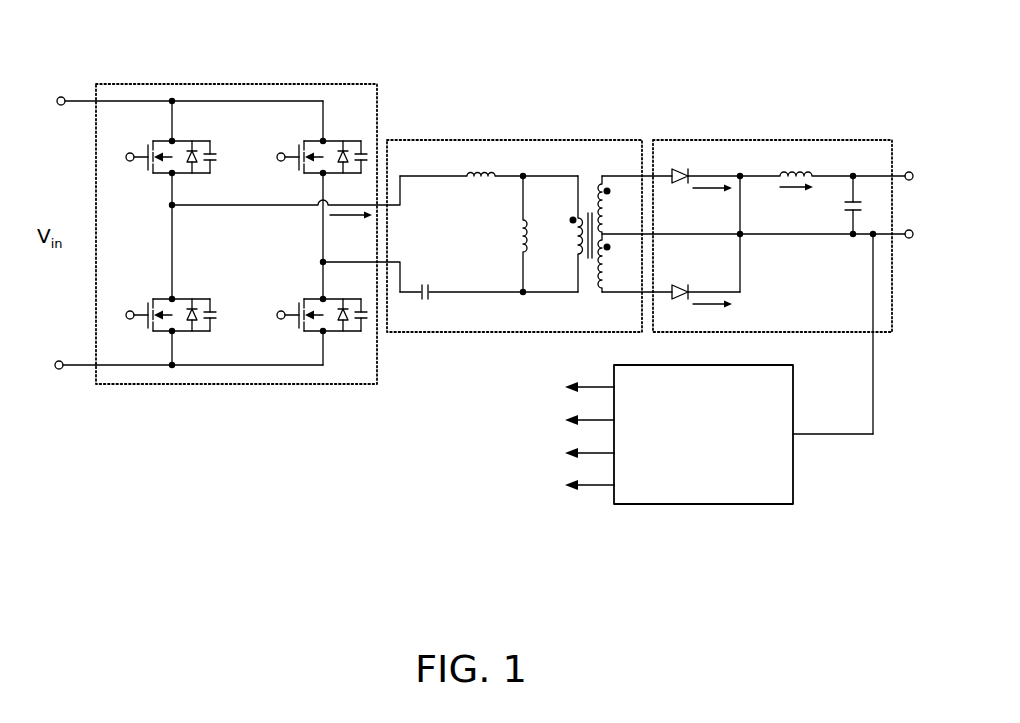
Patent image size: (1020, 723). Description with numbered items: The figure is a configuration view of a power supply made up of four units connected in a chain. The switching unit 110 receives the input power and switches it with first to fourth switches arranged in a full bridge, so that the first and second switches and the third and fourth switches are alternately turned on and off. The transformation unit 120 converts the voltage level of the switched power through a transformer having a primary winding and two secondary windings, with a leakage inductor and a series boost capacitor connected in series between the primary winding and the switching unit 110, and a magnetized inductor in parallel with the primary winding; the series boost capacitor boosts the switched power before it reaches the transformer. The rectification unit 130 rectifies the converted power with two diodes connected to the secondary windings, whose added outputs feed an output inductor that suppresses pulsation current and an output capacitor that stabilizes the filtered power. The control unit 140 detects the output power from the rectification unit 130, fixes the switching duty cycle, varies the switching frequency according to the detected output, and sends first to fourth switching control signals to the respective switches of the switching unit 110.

The switching unit 110 is at (264, 84).
The transformation unit 120 is at (539, 140).
The rectification unit 130 is at (766, 140).
The control unit 140 is at (705, 505).